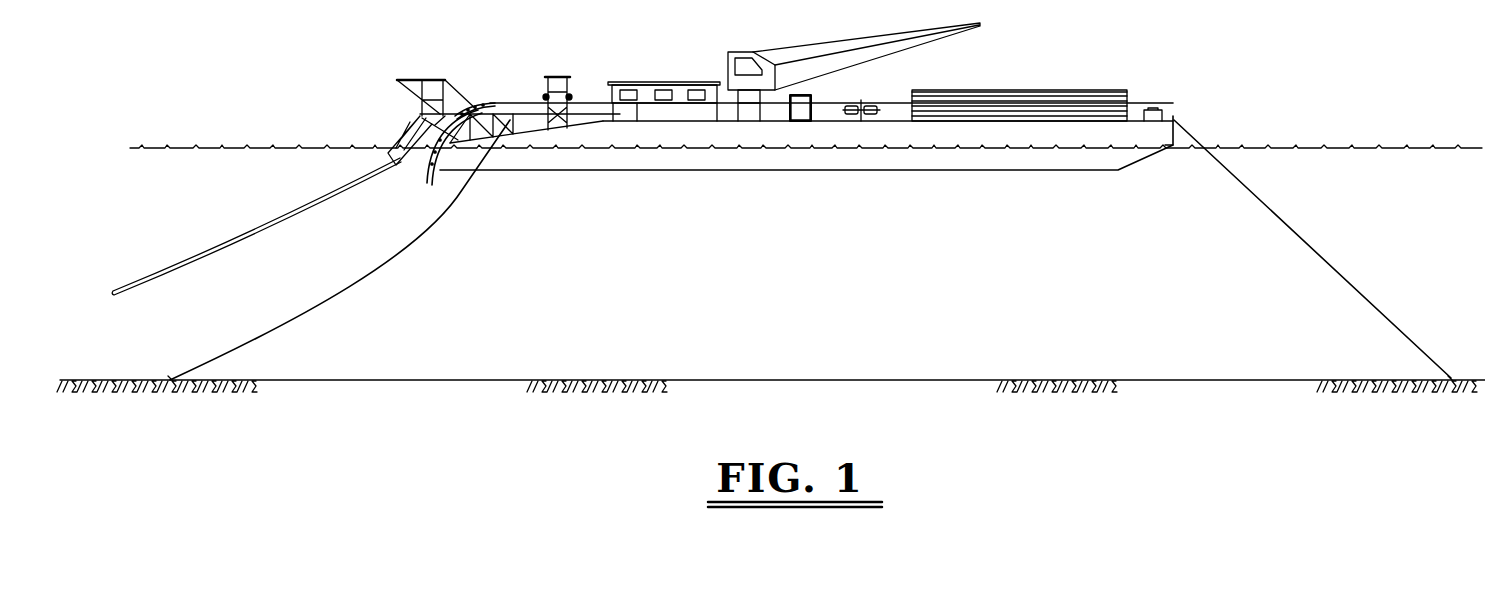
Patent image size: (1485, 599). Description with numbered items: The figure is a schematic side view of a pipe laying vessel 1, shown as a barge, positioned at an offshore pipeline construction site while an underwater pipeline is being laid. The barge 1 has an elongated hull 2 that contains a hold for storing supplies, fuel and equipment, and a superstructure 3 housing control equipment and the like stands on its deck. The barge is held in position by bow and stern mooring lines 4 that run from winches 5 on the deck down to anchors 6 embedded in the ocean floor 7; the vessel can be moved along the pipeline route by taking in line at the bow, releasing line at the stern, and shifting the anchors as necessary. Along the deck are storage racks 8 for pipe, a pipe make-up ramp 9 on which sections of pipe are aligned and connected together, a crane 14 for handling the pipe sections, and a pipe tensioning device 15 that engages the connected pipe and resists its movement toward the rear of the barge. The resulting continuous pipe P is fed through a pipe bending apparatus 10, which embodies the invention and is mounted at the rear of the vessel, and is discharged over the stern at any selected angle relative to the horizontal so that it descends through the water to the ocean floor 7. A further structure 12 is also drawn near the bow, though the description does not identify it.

The vessel 1 is at (1133, 172).
The hull 2 is at (813, 143).
The superstructure 3 is at (668, 86).
The mooring lines 4 is at (343, 292).
The winches 5 is at (1157, 108).
The anchors 6 is at (168, 378).
The ocean floor 7 is at (296, 413).
The storage racks 8 is at (1038, 89).
The pipe make-up ramp 9 is at (860, 104).
The pipe bending apparatus 10 is at (482, 94).
The tower / davit 12 is at (560, 74).
The crane 14 is at (741, 50).
The pipe tensioning device 15 is at (796, 112).
The continuous pipe P is at (240, 235).